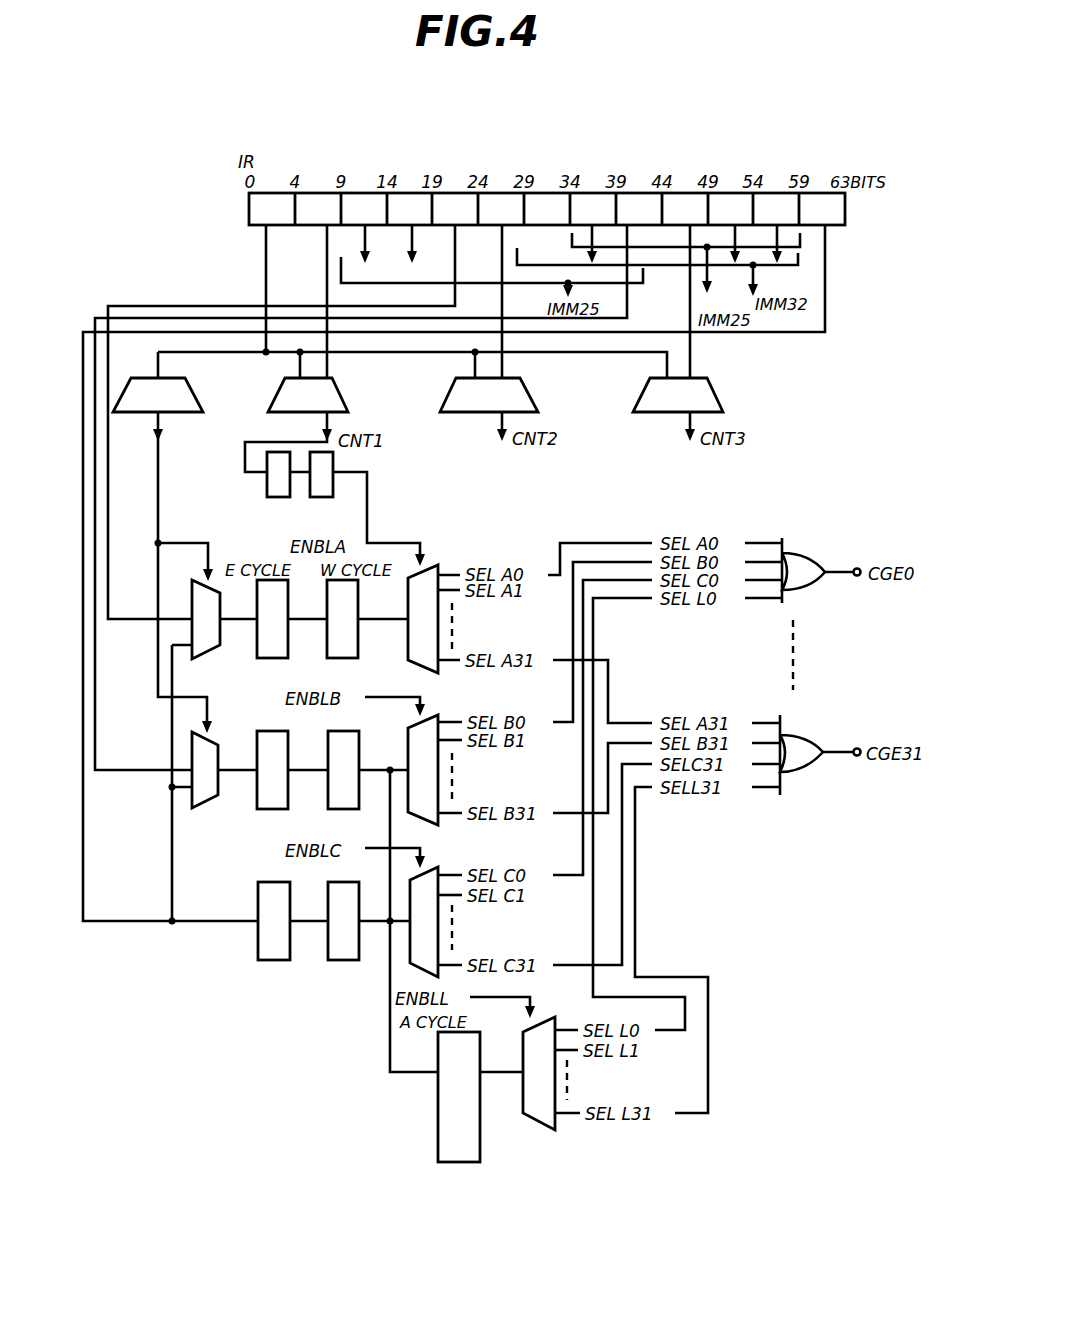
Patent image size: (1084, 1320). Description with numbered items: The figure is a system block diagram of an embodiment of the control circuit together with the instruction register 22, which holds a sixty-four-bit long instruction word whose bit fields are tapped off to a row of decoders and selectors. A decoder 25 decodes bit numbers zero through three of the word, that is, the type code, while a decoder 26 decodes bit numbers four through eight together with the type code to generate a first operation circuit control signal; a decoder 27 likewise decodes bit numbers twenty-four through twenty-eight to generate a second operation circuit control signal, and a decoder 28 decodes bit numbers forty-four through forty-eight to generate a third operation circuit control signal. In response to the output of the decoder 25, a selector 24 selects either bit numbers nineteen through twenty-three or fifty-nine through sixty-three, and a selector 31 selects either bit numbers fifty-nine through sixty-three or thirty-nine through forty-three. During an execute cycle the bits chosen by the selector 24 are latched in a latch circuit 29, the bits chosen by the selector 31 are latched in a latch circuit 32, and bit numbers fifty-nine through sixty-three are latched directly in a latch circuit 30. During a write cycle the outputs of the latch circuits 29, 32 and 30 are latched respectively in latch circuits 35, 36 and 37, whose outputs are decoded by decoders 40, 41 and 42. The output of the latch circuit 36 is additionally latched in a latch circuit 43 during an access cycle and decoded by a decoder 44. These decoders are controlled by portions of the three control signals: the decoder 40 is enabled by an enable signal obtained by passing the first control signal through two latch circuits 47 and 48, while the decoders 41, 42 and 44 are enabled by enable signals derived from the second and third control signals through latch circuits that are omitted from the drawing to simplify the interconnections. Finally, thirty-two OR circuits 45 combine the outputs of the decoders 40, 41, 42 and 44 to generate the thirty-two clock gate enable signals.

The instruction register 22 is at (858, 212).
The selector 24 is at (220, 640).
The decoder 25 is at (185, 392).
The decoder 26 is at (333, 392).
The decoder 27 is at (523, 396).
The decoder 28 is at (707, 393).
The latch circuit 29 is at (288, 635).
The latch circuit 30 is at (258, 903).
The selector 31 is at (218, 752).
The latch circuit 32 is at (288, 753).
The latch circuit 35 is at (358, 636).
The latch circuit 36 is at (359, 753).
The latch circuit 37 is at (359, 900).
The decoder 40 is at (430, 668).
The decoder 41 is at (430, 820).
The decoder 42 is at (410, 952).
The latch circuit 43 is at (437, 1083).
The decoder 44 is at (522, 1087).
The OR circuits 45 is at (820, 658).
The latch circuit 47 is at (267, 482).
The latch circuit 48 is at (333, 465).